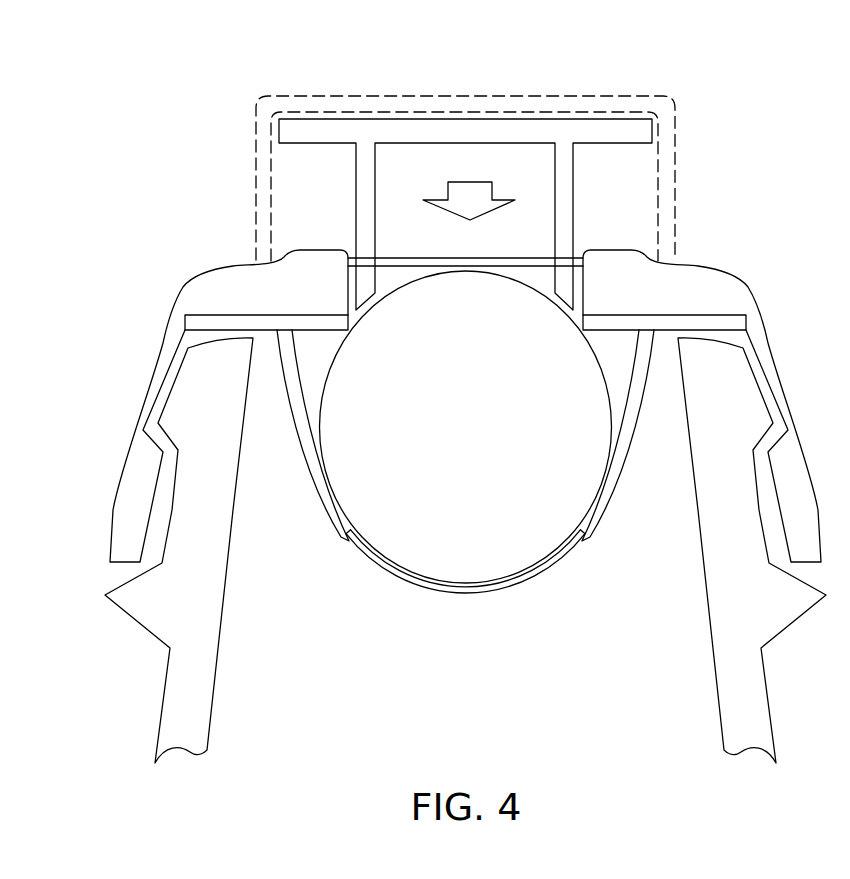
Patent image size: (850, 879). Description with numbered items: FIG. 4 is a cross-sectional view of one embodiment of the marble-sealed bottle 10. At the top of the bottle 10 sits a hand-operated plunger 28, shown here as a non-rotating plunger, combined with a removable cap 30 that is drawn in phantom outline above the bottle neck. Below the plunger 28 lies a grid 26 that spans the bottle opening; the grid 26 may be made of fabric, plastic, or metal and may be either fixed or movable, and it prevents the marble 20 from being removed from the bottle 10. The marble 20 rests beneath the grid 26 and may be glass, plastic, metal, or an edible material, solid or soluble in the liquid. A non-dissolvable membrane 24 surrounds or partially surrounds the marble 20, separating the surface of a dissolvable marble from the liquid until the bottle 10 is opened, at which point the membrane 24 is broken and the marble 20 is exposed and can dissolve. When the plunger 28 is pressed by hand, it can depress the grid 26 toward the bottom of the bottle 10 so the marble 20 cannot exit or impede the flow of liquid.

The bottle 10 is at (86, 178).
The marble 20 is at (437, 492).
The non-dissolvable membrane 24 is at (473, 597).
The grid 26 is at (410, 262).
The hand-operated plunger 28 is at (512, 130).
The removable cap 30 is at (347, 95).